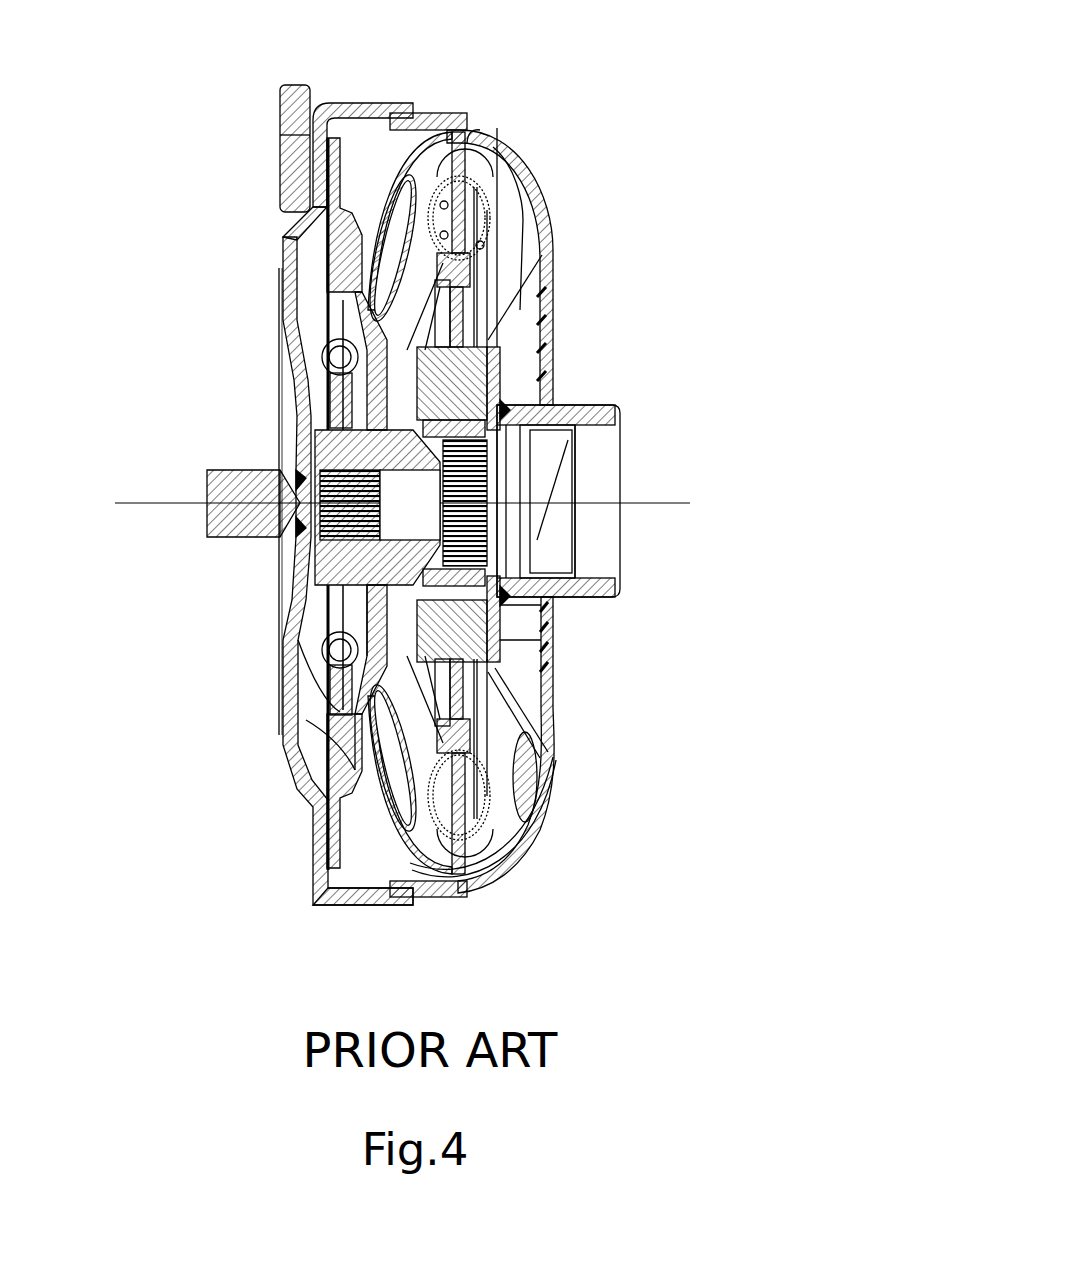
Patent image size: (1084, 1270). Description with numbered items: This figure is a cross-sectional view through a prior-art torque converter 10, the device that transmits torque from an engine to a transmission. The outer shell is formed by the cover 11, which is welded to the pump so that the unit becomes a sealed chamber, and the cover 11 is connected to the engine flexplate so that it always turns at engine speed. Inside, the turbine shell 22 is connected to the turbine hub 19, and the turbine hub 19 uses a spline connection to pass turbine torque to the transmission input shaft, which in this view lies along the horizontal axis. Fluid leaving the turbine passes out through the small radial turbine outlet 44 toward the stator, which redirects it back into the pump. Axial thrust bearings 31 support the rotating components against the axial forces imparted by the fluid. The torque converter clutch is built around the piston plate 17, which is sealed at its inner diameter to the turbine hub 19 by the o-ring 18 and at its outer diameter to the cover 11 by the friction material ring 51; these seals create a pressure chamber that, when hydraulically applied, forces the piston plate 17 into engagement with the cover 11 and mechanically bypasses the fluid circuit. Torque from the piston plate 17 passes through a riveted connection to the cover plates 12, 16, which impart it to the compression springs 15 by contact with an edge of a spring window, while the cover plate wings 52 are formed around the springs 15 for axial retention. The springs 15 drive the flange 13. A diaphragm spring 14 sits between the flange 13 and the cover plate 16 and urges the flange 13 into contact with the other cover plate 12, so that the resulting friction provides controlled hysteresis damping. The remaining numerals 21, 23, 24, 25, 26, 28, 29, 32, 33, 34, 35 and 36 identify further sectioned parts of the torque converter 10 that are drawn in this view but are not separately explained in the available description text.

The torque converter 10 is at (555, 142).
The cover 11 is at (282, 268).
The cover plate 12 is at (323, 307).
The flange 13 is at (322, 775).
The diaphragm spring 14 is at (327, 407).
The compression springs 15 is at (317, 650).
The cover plate 16 is at (323, 317).
The piston plate 17 is at (290, 238).
The o-ring 18 is at (410, 528).
The turbine hub 19 is at (347, 550).
The lower housing lobe 21 is at (540, 680).
The turbine shell 22 is at (393, 163).
The coil spring 23 is at (420, 168).
The spring with balls 24 is at (447, 132).
The diaphragm spring 25 is at (495, 330).
The flange 26 is at (513, 623).
The partition 28 is at (507, 580).
The flange ring 29 is at (520, 397).
The axial thrust bearings 31 is at (540, 385).
The joint 32 is at (490, 128).
The housing chamber 33 is at (507, 198).
The housing shell 34 is at (520, 130).
The cylinder housing 35 is at (603, 408).
The cylinder cavity 36 is at (553, 457).
The turbine outlet 44 is at (427, 703).
The friction material ring 51 is at (310, 847).
The cover plate wings 52 is at (330, 727).